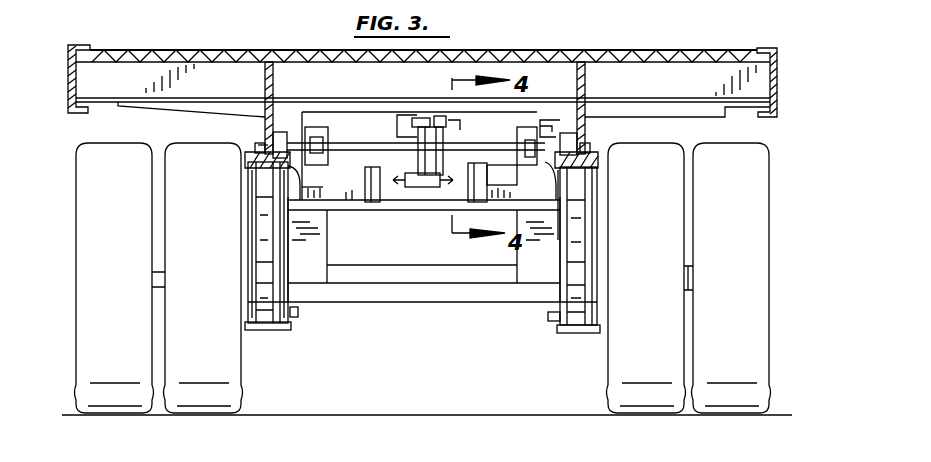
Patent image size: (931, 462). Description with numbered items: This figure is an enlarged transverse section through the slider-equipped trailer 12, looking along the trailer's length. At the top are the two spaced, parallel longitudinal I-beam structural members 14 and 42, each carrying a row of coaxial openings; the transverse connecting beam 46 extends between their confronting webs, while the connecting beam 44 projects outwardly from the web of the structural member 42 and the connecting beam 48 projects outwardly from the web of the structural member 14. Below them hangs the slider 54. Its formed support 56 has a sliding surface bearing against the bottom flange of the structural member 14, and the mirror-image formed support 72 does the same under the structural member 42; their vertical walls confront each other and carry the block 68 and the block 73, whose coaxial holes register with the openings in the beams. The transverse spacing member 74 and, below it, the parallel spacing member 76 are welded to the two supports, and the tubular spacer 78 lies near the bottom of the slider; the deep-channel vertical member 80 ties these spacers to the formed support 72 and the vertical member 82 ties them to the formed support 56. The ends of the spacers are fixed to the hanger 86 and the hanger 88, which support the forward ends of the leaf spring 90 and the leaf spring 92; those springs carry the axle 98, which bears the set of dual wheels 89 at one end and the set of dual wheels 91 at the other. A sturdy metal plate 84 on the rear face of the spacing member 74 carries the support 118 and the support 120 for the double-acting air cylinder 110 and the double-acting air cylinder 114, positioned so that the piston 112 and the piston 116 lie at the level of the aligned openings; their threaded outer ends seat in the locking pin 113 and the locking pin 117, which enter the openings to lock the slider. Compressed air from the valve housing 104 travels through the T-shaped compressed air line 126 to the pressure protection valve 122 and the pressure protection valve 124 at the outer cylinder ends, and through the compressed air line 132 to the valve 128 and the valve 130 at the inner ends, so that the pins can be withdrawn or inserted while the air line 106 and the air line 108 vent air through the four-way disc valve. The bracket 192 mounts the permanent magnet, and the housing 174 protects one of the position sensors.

The automotive trailer 12 is at (726, 47).
The elongated structural member 14 is at (587, 78).
The elongated structural member 42 is at (266, 68).
The connecting beam 44 is at (142, 72).
The connecting beam 46 is at (493, 72).
The connecting beam 48 is at (762, 83).
The slider 54 is at (426, 313).
The formed support 56 is at (606, 164).
The block 68 is at (590, 133).
The formed support 72 is at (238, 163).
The block 73 is at (278, 130).
The spacing member 74 is at (360, 210).
The spacing member 76 is at (476, 302).
The tubular spacer 78 is at (374, 302).
The vertical member 80 is at (317, 290).
The vertical member 82 is at (541, 302).
The metal plate 84 is at (300, 194).
The hanger 86 is at (280, 292).
The hanger 88 is at (592, 254).
The set of dual wheels 89 is at (723, 408).
The leaf spring 90 is at (268, 330).
The set of dual wheels 91 is at (195, 408).
The leaf spring 92 is at (581, 330).
The axle 98 is at (152, 283).
The valve housing 104 is at (421, 188).
The air line 106 is at (406, 184).
The air line 108 is at (472, 190).
The double-acting air cylinder 110 is at (347, 137).
The piston 112 is at (292, 172).
The locking pin 113 is at (260, 145).
The double-acting air cylinder 114 is at (504, 137).
The piston 116 is at (548, 160).
The locking pin 117 is at (592, 147).
The support 118 is at (315, 128).
The support 120 is at (518, 168).
The valve 122 is at (315, 200).
The valve 124 is at (533, 152).
The compressed air line 126 is at (364, 160).
The valve 128 is at (430, 125).
The valve 130 is at (458, 122).
The compressed air line 132 is at (398, 116).
The housing 174 is at (569, 106).
The bracket 192 is at (596, 117).